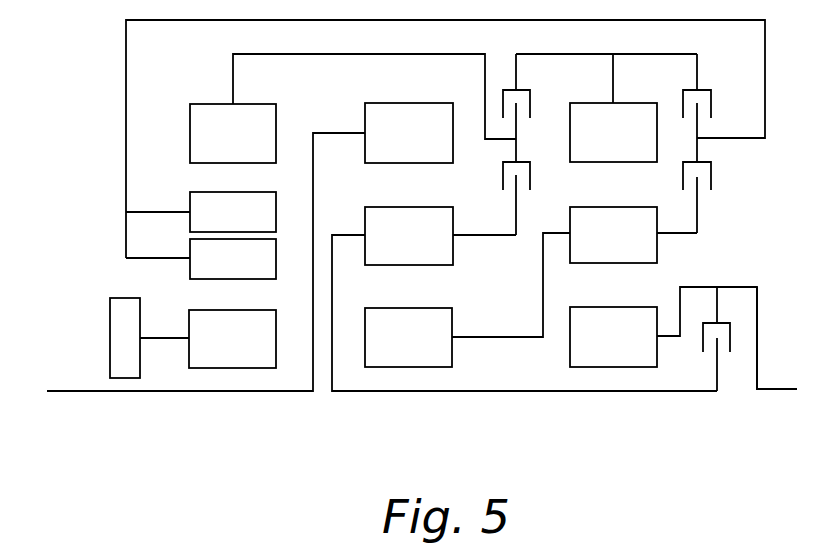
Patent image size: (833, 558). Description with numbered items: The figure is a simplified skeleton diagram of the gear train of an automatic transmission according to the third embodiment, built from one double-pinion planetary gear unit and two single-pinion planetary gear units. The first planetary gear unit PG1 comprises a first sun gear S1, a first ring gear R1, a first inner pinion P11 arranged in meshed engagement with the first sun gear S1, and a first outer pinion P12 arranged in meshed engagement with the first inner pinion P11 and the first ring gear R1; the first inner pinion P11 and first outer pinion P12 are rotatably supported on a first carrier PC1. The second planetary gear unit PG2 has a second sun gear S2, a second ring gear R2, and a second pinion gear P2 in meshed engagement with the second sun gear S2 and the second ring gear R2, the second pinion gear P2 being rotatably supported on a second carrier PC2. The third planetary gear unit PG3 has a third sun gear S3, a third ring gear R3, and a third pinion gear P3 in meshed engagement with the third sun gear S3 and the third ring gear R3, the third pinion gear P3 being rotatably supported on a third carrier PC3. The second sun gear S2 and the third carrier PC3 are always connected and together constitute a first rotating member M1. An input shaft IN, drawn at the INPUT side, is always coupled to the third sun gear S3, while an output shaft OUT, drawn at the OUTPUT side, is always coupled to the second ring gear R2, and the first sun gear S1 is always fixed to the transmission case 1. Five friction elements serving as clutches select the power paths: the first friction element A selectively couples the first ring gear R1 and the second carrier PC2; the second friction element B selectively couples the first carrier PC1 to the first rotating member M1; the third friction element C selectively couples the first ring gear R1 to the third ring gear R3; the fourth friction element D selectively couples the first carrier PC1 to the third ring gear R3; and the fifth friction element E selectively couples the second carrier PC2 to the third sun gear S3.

The first planetary gear unit PG1 is at (231, 386).
The second planetary gear unit PG2 is at (425, 386).
The third planetary gear unit PG3 is at (618, 386).
The first carrier PC1 is at (125, 238).
The second carrier PC2 is at (480, 236).
The third carrier PC3 is at (678, 235).
The first rotating member M1 is at (495, 339).
The transmission case 1 is at (110, 316).
The output shaft OUT is at (77, 393).
The input shaft IN is at (780, 390).
The output OUTPUT is at (62, 373).
The input INPUT is at (788, 370).
The first friction element A is at (528, 193).
The second friction element B is at (706, 197).
The third friction element C is at (528, 108).
The fourth friction element D is at (707, 108).
The fifth friction element E is at (726, 339).
The first ring gear R1 is at (233, 133).
The second ring gear R2 is at (409, 133).
The third ring gear R3 is at (613, 132).
The first inner pinion P11 is at (233, 259).
The first outer pinion P12 is at (233, 212).
The second pinion gear P2 is at (409, 236).
The third pinion gear P3 is at (613, 235).
The first sun gear S1 is at (232, 339).
The second sun gear S2 is at (408, 337).
The third sun gear S3 is at (613, 337).